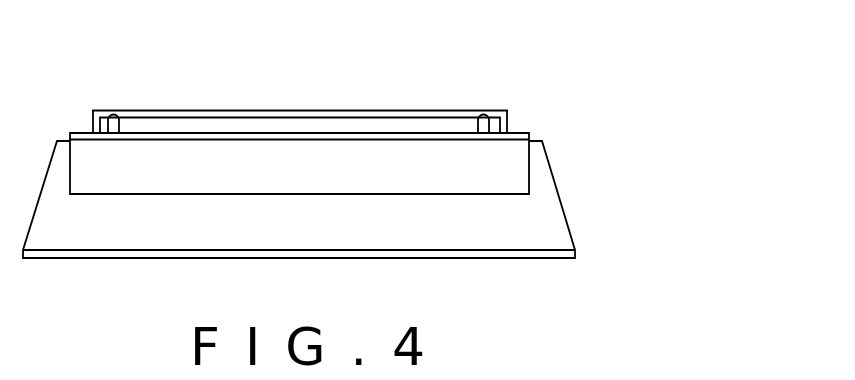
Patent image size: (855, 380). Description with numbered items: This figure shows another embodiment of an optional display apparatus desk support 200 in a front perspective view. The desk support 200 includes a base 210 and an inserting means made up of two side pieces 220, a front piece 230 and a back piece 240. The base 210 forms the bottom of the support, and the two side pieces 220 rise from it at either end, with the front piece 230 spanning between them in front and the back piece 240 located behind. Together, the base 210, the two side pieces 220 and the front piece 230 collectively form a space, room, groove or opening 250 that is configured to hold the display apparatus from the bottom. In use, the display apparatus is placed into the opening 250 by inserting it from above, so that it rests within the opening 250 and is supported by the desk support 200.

The display apparatus desk support 200 is at (438, 83).
The base 210 is at (535, 235).
The side pieces 220 is at (120, 128).
The front piece 230 is at (232, 165).
The back piece 240 is at (335, 110).
The opening 250 is at (353, 133).